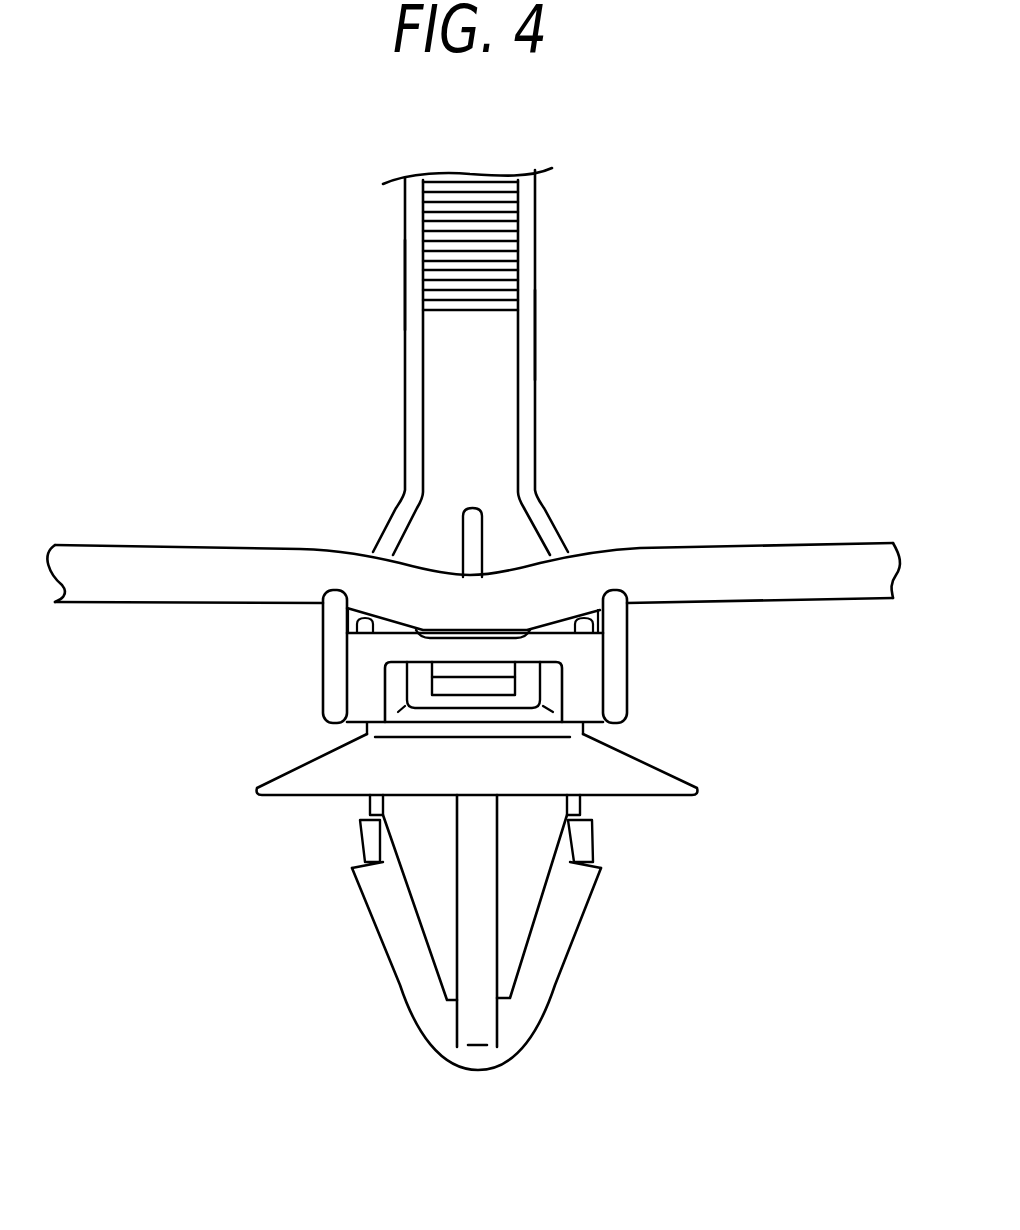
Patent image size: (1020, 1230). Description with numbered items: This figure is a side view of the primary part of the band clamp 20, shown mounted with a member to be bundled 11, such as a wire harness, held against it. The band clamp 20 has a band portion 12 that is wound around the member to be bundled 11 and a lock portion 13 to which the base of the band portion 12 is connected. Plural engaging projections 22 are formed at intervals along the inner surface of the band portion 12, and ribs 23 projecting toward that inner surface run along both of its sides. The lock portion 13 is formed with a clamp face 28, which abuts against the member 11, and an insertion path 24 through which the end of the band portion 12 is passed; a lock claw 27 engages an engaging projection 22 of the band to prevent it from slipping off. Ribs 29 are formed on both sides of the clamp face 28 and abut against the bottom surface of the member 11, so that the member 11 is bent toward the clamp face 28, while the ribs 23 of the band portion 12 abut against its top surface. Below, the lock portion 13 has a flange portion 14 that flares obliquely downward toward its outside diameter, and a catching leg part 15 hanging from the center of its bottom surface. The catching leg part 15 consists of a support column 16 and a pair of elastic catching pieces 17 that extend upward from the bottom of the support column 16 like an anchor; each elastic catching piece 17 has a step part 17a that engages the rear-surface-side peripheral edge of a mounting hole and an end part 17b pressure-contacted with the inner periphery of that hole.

The member to be bundled 11 is at (692, 553).
The band portion 12 is at (463, 372).
The lock portion 13 is at (476, 626).
The flange portion 14 is at (630, 765).
The catching leg part 15 is at (477, 936).
The support column 16 is at (478, 895).
The elastic catching pieces 17 is at (477, 932).
The step part 17a is at (364, 820).
The end part 17b is at (367, 804).
The band clamp 20 is at (721, 398).
The engaging projections 22 is at (503, 268).
The ribs 23 is at (409, 291).
The insertion path 24 is at (417, 683).
The lock claw 27 is at (472, 688).
The clamp face 28 is at (388, 627).
The ribs 29 is at (320, 608).